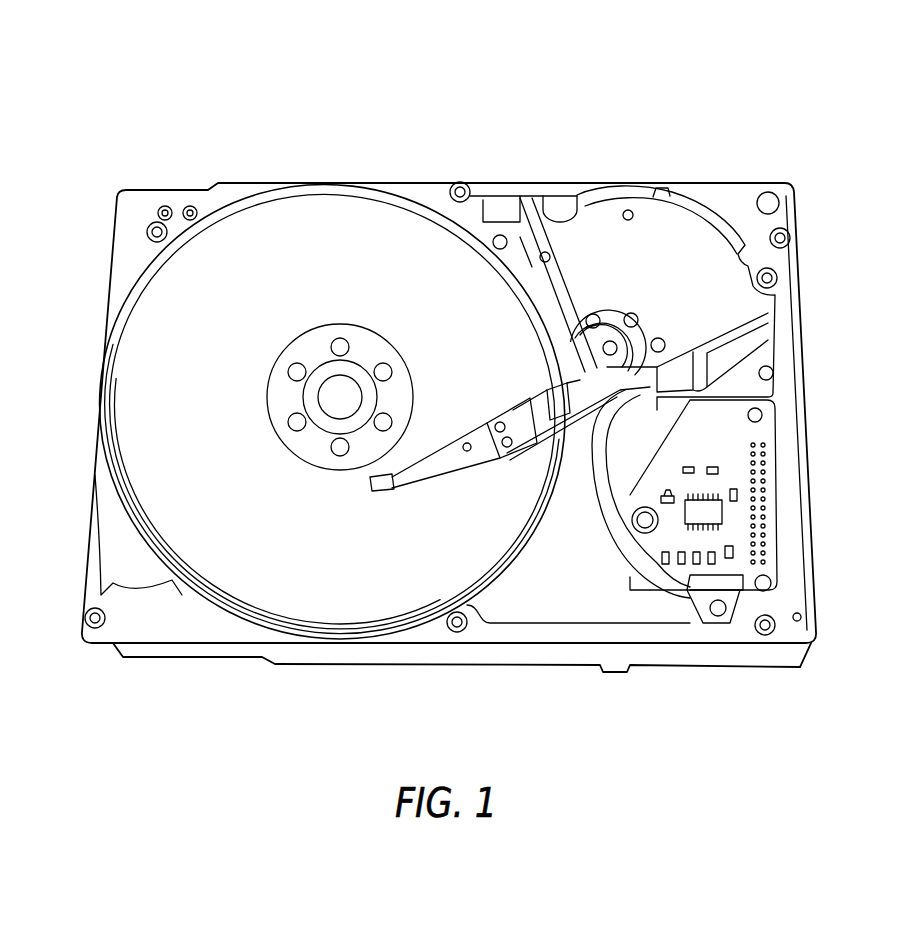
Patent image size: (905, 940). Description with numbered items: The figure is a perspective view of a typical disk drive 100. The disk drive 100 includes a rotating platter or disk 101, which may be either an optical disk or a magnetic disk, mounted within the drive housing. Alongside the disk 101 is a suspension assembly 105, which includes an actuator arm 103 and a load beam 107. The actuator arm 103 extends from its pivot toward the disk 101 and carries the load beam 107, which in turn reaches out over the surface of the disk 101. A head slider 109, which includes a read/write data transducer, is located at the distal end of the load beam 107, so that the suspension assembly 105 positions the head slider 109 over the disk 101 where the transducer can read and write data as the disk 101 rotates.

The disk drive 100 is at (658, 57).
The disk 101 is at (167, 302).
The actuator arm 103 is at (566, 425).
The suspension assembly 105 is at (434, 508).
The load beam 107 is at (437, 418).
The head slider 109 is at (367, 483).